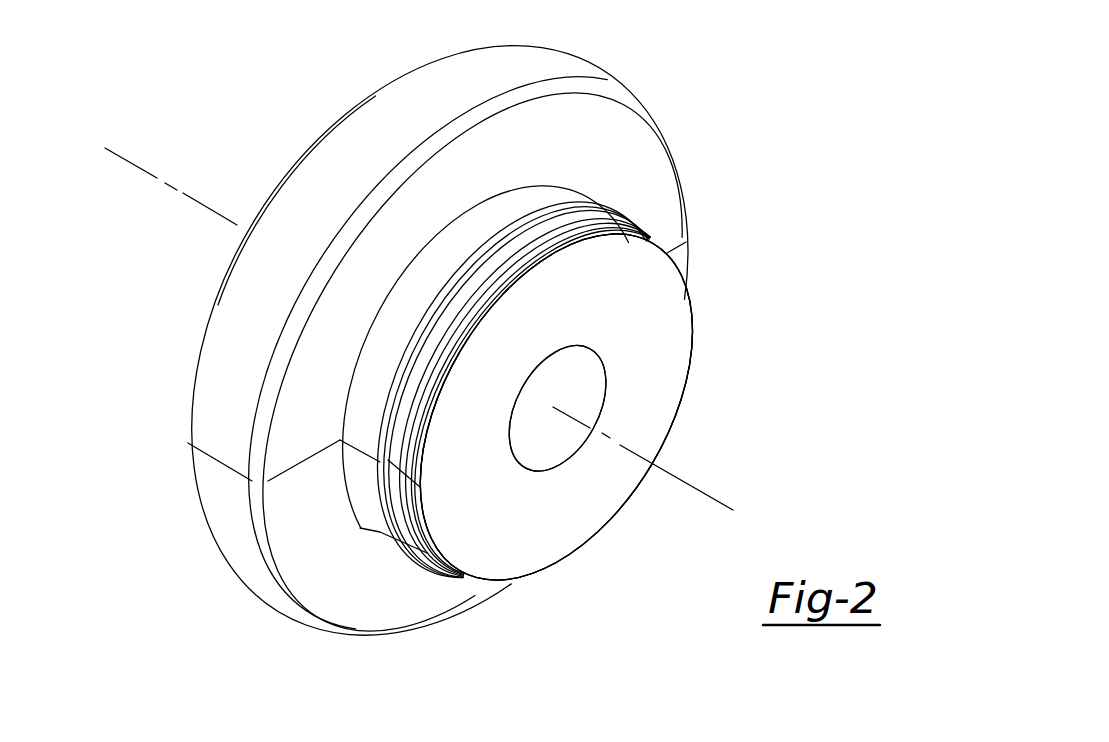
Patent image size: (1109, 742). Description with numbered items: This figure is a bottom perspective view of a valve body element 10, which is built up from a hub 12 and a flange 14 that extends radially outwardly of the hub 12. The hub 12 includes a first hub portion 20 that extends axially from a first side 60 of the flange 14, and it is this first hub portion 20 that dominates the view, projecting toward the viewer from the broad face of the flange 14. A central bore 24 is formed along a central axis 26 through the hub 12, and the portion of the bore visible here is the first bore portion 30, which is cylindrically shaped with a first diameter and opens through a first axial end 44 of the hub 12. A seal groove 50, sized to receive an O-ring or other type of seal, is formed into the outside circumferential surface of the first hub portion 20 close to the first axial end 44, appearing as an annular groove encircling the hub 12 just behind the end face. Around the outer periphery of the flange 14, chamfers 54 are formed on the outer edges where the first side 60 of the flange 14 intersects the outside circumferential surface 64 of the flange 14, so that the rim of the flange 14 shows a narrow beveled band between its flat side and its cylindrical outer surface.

The valve body element 10 is at (443, 323).
The hub 12 is at (512, 545).
The flange 14 is at (210, 403).
The first hub portion 20 is at (556, 407).
The central bore 24 is at (530, 444).
The central axis 26 is at (172, 186).
The first bore portion 30 is at (557, 408).
The first axial end 44 is at (660, 353).
The seal groove 50 is at (410, 423).
The chamfers 54 is at (272, 542).
The first side 60 is at (648, 181).
The outside circumferential surface 64 is at (452, 73).